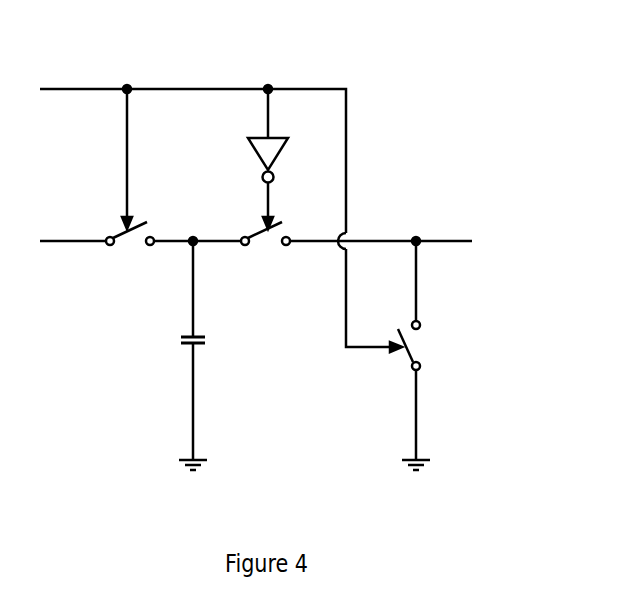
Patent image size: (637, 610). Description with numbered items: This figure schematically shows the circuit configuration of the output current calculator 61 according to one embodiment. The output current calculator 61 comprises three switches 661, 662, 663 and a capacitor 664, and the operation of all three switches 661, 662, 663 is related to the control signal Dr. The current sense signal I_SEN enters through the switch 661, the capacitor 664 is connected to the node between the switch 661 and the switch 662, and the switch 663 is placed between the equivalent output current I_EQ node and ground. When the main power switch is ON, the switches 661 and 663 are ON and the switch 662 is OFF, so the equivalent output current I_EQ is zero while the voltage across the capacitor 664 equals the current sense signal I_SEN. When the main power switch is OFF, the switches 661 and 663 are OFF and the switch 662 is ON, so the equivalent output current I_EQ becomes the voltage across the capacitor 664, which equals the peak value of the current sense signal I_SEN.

The output current calculator 61 is at (428, 92).
The switch 661 is at (130, 247).
The switch 662 is at (265, 247).
The switch 663 is at (428, 357).
The capacitor 664 is at (212, 357).